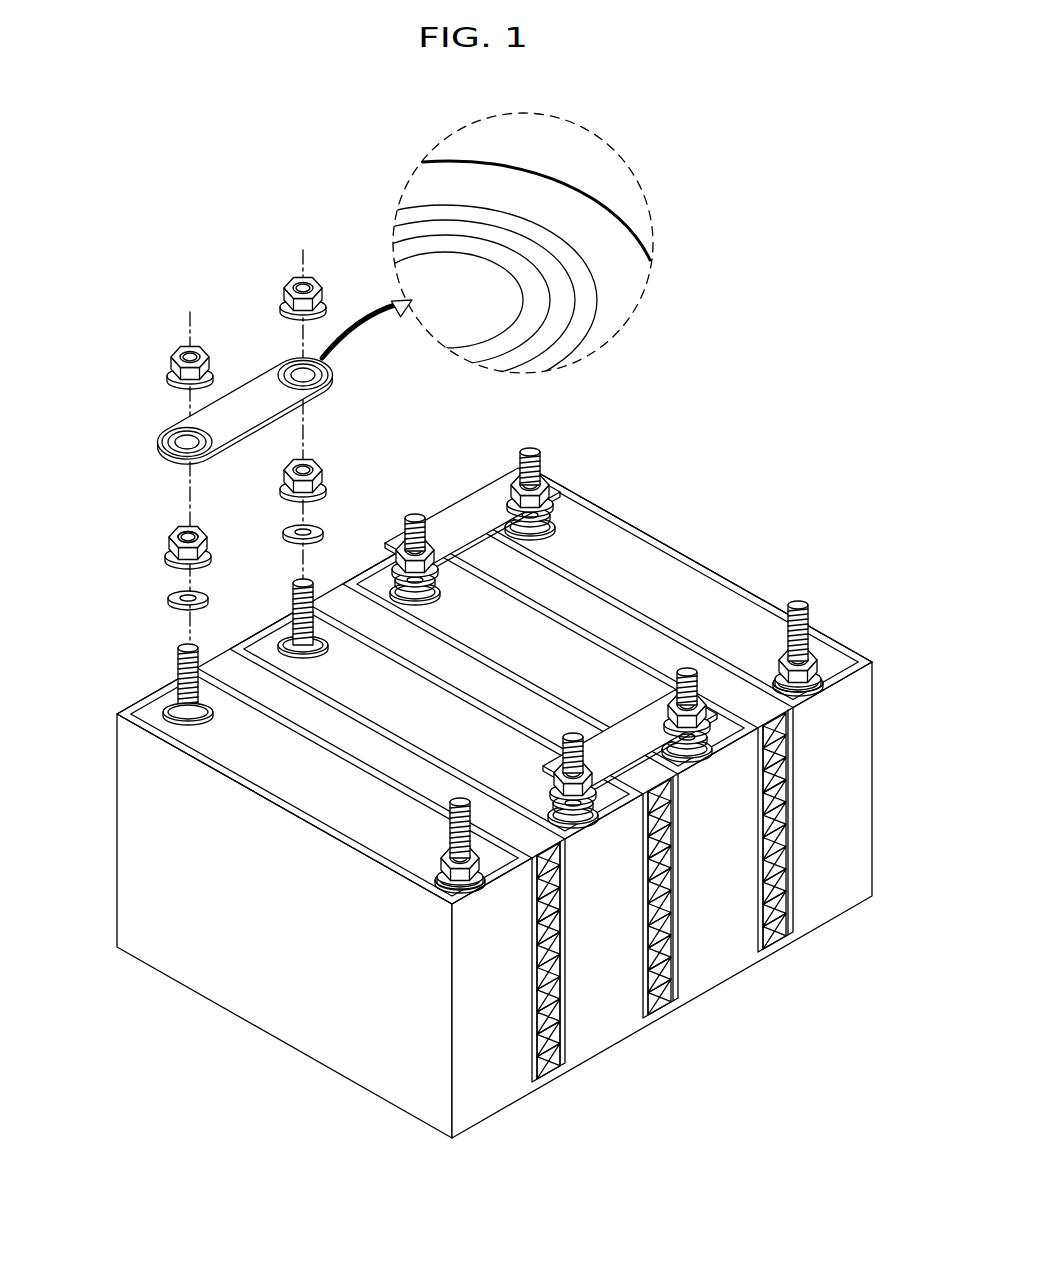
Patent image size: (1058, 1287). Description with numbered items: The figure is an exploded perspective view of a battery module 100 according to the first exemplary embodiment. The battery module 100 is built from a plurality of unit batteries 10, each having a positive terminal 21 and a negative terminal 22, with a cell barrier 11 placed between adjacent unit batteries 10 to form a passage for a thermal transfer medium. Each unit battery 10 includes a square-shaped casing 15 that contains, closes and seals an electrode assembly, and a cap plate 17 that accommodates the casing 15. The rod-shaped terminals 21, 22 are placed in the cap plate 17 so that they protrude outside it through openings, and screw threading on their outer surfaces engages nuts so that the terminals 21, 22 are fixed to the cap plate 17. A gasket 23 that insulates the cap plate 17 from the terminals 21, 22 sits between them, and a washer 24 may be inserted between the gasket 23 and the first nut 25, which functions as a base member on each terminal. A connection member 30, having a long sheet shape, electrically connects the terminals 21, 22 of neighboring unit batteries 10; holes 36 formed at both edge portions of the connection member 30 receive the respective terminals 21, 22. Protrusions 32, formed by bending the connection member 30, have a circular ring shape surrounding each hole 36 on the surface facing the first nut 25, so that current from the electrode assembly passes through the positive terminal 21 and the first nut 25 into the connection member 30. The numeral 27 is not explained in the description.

The battery module 100 is at (347, 117).
The unit battery 10 is at (505, 1120).
The cell barrier 11 is at (553, 1086).
The casing 15 is at (260, 982).
The cap plate 17 is at (200, 738).
The positive terminal 21 is at (178, 653).
The negative terminal 22 is at (300, 585).
The gasket 23 is at (166, 708).
The washer 24 is at (170, 598).
The first nut 25 is at (170, 541).
The nut thread hole 27 is at (180, 530).
The connection member 30 is at (164, 446).
The protrusion 32 is at (290, 372).
The hole 36 is at (185, 437).